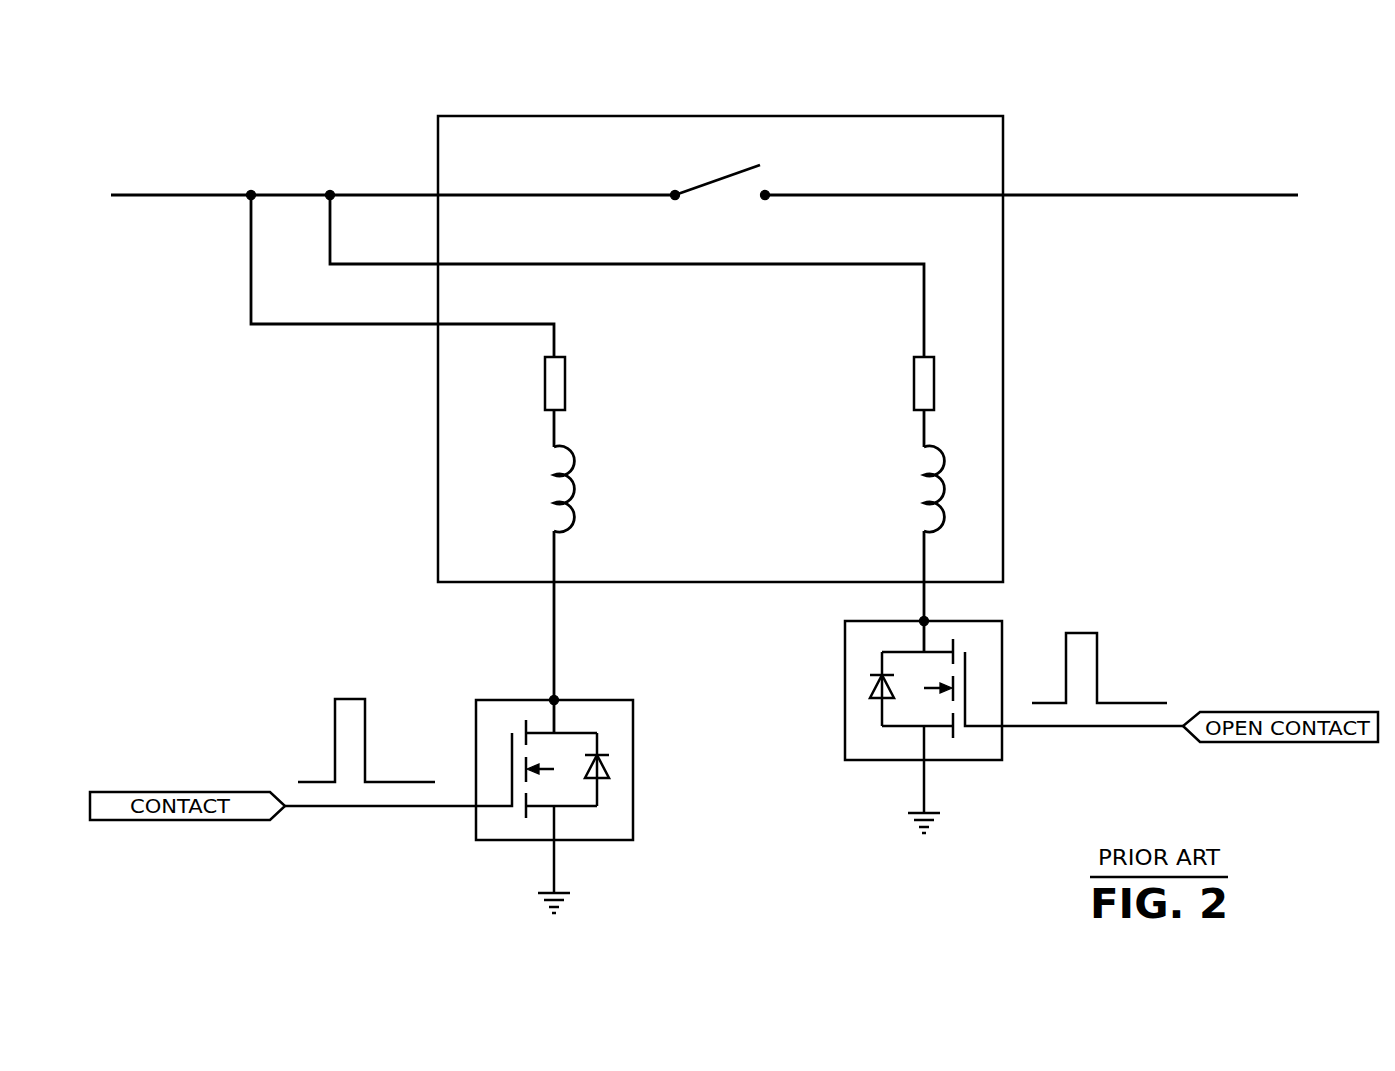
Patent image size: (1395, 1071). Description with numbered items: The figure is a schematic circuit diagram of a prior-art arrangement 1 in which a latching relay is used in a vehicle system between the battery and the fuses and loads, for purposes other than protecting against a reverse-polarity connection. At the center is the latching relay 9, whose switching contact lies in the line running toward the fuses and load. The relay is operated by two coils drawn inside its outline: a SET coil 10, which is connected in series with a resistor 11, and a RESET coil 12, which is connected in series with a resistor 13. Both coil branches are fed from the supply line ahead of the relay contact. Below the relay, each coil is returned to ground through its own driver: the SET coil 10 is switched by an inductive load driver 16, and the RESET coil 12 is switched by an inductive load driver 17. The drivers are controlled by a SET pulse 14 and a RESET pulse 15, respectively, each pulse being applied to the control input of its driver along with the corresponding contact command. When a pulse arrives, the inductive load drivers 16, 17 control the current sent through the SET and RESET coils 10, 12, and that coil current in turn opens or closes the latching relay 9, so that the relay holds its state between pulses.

The latching relay circuit 1 is at (1264, 135).
The latching relay 9 is at (1004, 424).
The SET coil 10 is at (507, 480).
The resistor 11 is at (543, 388).
The RESET coil 12 is at (984, 492).
The resistor 13 is at (936, 378).
The SET pulse 14 is at (331, 727).
The RESET pulse 15 is at (1098, 665).
The inductive load driver 16 is at (610, 841).
The inductive load driver 17 is at (978, 761).